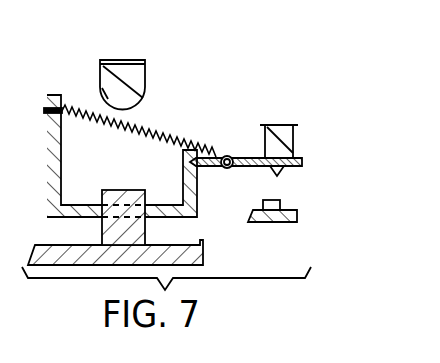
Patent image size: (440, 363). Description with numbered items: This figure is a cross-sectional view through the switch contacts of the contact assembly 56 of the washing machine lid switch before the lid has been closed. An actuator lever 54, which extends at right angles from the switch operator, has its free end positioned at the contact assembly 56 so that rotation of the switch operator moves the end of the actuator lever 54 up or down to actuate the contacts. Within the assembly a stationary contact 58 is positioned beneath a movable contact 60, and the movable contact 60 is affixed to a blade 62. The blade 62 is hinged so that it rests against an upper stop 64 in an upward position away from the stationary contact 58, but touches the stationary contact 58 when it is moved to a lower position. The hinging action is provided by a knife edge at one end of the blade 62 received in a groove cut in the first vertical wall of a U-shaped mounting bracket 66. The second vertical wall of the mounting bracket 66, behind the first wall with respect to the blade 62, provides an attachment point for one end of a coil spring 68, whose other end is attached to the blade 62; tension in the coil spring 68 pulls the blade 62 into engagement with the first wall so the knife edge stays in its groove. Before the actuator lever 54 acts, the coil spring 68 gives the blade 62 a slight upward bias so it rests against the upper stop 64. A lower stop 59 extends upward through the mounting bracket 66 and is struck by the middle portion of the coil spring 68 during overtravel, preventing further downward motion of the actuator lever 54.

The actuator lever 54 is at (118, 60).
The contact assembly 56 is at (263, 77).
The stationary contact 58 is at (300, 209).
The lower stop 59 is at (120, 230).
The movable contact 60 is at (283, 173).
The blade 62 is at (252, 155).
The upper stop 64 is at (298, 140).
The U-shaped mounting bracket 66 is at (188, 190).
The coil spring 68 is at (78, 110).